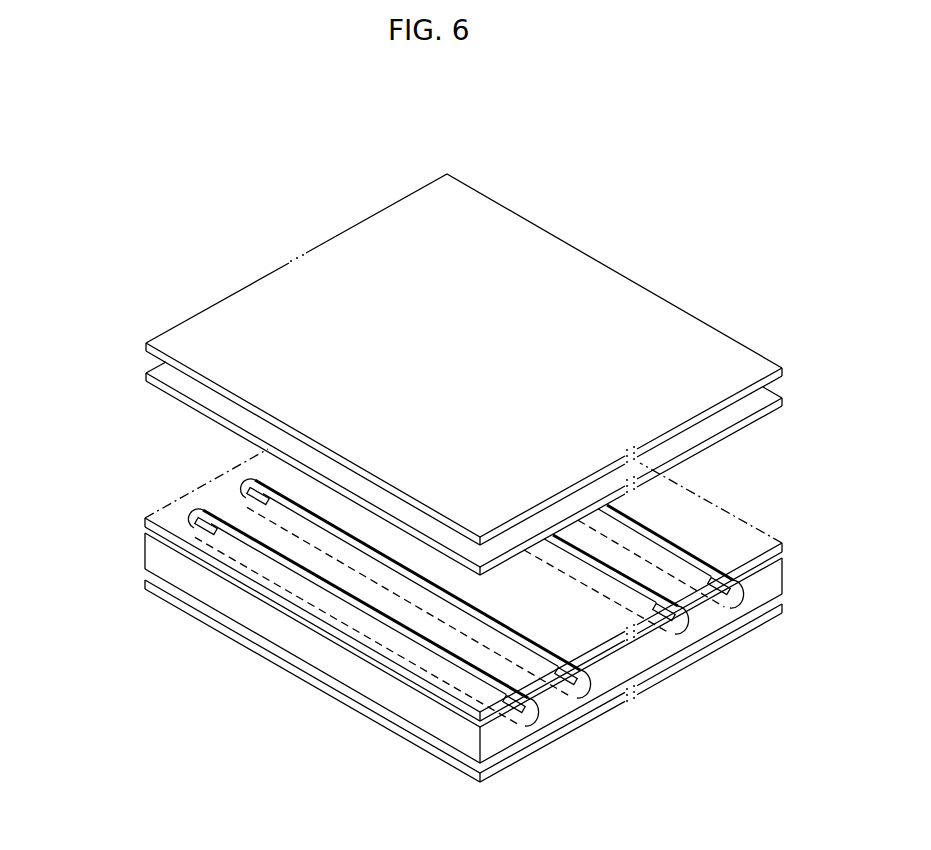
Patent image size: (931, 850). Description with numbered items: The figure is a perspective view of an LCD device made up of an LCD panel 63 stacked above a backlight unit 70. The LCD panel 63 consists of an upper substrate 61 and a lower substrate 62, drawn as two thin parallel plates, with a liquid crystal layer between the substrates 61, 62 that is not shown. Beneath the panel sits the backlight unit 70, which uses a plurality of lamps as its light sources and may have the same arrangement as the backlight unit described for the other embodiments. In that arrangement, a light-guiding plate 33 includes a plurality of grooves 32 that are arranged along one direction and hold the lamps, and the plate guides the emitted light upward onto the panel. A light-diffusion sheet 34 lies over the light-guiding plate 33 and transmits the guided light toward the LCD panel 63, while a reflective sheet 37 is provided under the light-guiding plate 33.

The LCD panel 63 is at (84, 345).
The upper substrate 61 is at (146, 344).
The lower substrate 62 is at (147, 374).
The backlight unit 70 is at (142, 472).
The light-diffusion sheet 34 is at (720, 503).
The light-guiding plate 33 is at (782, 578).
The grooves 32 is at (742, 605).
The reflective sheet 37 is at (540, 740).